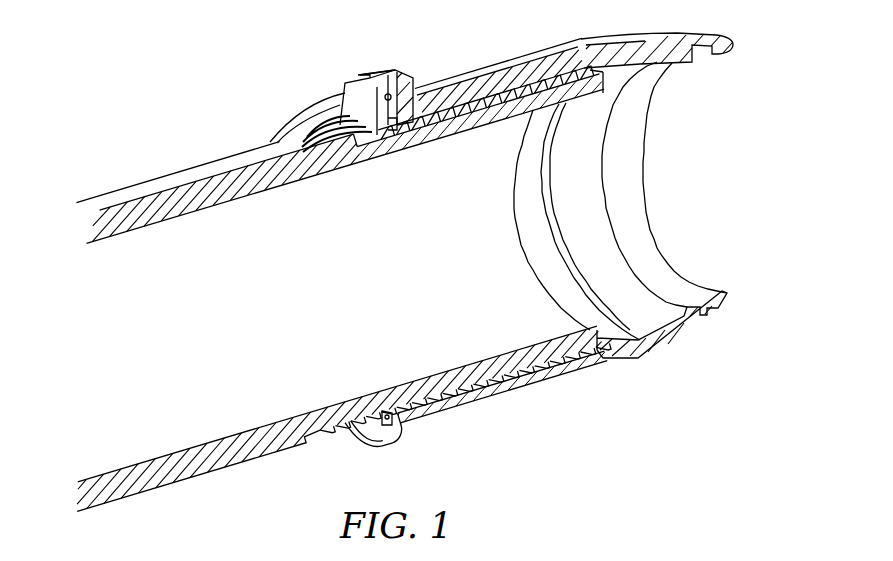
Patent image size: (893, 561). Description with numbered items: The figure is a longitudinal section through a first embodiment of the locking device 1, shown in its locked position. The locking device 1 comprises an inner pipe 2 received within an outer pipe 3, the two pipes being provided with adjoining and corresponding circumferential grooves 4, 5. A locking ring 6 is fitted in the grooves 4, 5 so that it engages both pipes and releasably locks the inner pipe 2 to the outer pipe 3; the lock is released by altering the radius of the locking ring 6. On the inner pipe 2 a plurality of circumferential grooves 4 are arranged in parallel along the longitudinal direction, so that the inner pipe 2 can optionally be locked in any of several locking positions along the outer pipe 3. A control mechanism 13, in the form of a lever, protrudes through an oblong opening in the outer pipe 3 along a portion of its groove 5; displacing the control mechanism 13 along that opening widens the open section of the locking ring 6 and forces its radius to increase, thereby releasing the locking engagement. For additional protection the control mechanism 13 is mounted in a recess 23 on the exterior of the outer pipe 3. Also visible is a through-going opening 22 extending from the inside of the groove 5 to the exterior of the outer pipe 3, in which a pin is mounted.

The locking device 1 is at (270, 50).
The inner pipe 2 is at (210, 195).
The outer pipe 3 is at (573, 377).
The circumferential grooves 4 is at (450, 120).
The circumferential groove 5 is at (395, 423).
The locking ring 6 is at (403, 127).
The control mechanism 13 is at (380, 80).
The through-going opening 22 is at (334, 121).
The recess 23 is at (405, 68).